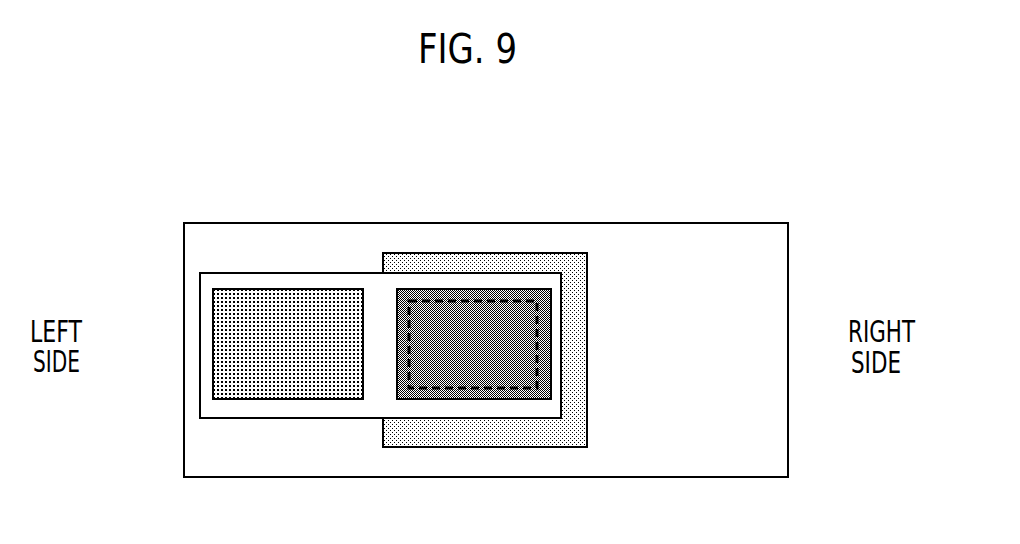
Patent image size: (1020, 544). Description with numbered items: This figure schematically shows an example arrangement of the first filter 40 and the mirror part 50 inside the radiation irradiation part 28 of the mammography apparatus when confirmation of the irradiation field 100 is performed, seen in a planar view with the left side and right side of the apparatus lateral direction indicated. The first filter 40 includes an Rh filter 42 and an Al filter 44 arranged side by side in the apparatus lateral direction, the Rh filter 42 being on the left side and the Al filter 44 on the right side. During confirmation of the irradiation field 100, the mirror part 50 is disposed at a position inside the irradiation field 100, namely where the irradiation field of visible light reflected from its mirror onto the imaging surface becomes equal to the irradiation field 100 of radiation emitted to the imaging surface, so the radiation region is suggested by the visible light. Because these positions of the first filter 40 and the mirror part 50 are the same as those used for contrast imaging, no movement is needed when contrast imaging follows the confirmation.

The radiation irradiation part 28 is at (184, 450).
The first filter 40 is at (200, 320).
The Rh filter 42 is at (324, 289).
The Al filter 44 is at (553, 298).
The mirror part 50 is at (496, 253).
The irradiation field 100 is at (421, 301).